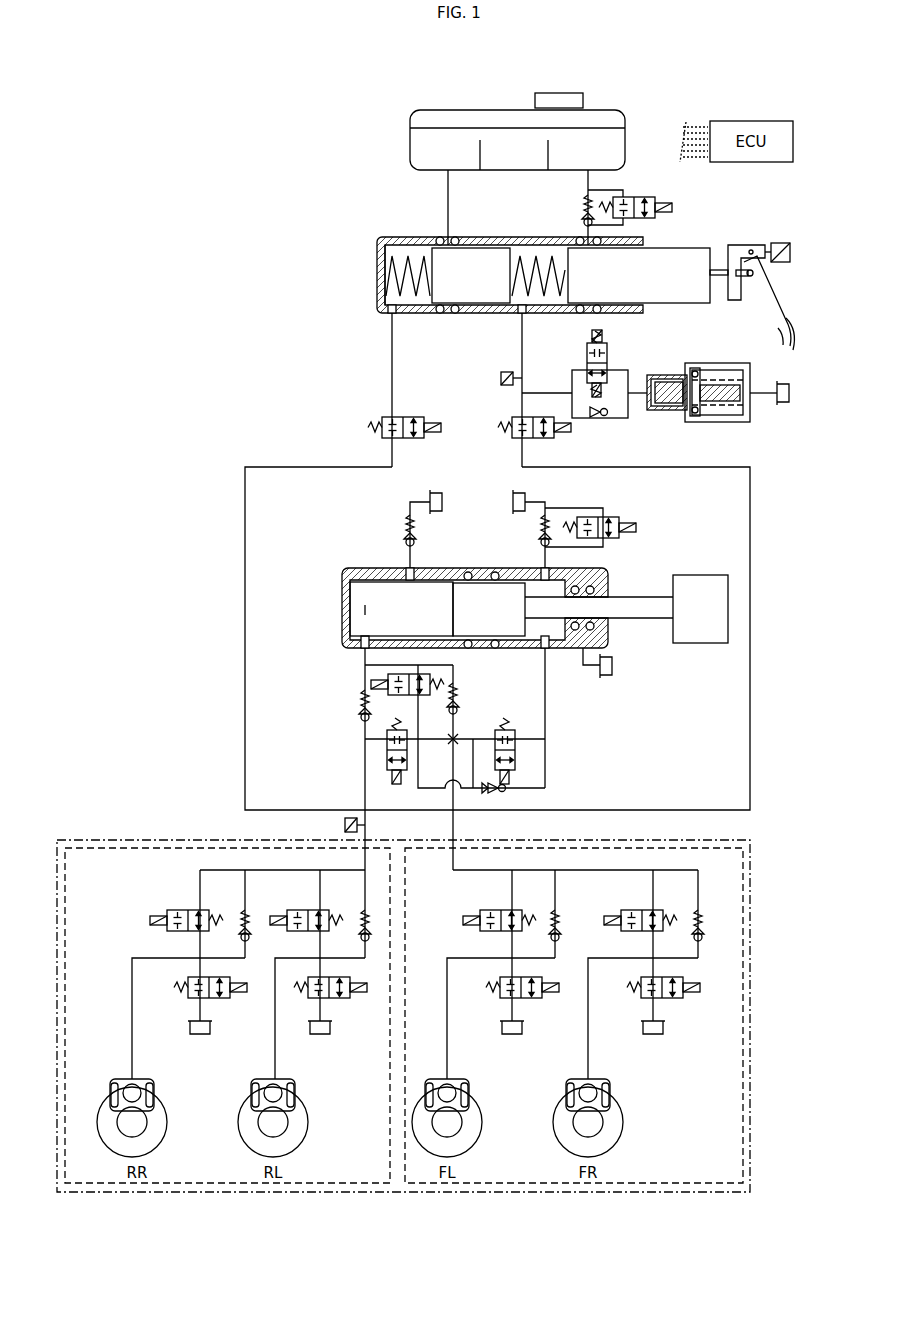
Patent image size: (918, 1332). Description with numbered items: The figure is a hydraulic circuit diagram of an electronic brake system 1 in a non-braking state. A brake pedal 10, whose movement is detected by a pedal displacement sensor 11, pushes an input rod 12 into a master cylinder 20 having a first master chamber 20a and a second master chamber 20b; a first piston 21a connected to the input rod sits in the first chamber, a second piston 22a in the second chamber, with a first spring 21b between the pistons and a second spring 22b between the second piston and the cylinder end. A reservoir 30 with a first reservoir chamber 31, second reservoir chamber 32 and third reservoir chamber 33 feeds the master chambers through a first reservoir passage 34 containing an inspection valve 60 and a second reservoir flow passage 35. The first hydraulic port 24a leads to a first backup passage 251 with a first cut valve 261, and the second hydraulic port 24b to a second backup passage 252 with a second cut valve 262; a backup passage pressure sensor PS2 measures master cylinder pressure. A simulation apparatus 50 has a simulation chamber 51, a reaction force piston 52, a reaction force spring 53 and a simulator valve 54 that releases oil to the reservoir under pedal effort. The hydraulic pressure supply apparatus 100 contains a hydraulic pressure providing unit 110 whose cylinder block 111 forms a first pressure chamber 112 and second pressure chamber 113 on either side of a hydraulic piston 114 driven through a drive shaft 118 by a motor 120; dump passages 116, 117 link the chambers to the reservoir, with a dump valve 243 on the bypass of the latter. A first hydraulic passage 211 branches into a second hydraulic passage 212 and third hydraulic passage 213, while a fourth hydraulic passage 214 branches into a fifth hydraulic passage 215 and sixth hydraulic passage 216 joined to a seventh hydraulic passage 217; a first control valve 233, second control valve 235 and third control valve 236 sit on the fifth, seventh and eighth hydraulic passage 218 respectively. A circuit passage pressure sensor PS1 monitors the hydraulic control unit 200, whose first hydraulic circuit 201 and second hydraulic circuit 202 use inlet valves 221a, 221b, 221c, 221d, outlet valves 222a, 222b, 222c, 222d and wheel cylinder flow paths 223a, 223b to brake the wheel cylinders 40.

The electronic brake system 1 is at (294, 86).
The reservoir 30 is at (410, 122).
The first reservoir chamber 31 is at (591, 147).
The second reservoir chamber 32 is at (501, 147).
The third reservoir chamber 33 is at (430, 147).
The first reservoir passage 34 is at (590, 186).
The second reservoir flow passage 35 is at (448, 186).
The inspection valve 60 is at (655, 200).
The master cylinder 20 is at (377, 258).
The first master chamber 20a is at (550, 250).
The second master chamber 20b is at (438, 246).
The first piston 21a is at (662, 252).
The first spring 21b is at (540, 308).
The second piston 22a is at (472, 252).
The second spring 22b is at (398, 282).
The first hydraulic port 24a is at (516, 312).
The second hydraulic port 24b is at (386, 310).
The input rod 12 is at (717, 269).
The pedal displacement sensor 11 is at (787, 244).
The brake pedal 10 is at (778, 298).
The second backup passage 252 is at (392, 357).
The first backup passage 251 is at (522, 357).
The backup passage pressure sensor PS2 is at (501, 379).
The second cut valve 262 is at (382, 426).
The first cut valve 261 is at (512, 426).
The simulator valve 54 is at (607, 352).
The reaction force piston 52 is at (665, 375).
The simulation chamber 51 is at (712, 363).
The reaction force spring 53 is at (692, 366).
The simulation apparatus 50 is at (764, 407).
The hydraulic pressure supply apparatus 100 is at (336, 527).
The hydraulic pressure providing unit 110 is at (338, 578).
The cylinder block 111 is at (346, 601).
The first pressure chamber 112 is at (365, 612).
The hydraulic piston 114 is at (500, 582).
The dump passage 116 is at (410, 551).
The dump passage 117 is at (548, 556).
The drive shaft 118 is at (640, 620).
The motor 120 is at (700, 575).
The dump valve 243 is at (592, 516).
The second pressure chamber 113 is at (552, 650).
The first hydraulic passage 211 is at (365, 658).
The second hydraulic passage 212 is at (453, 665).
The third hydraulic passage 213 is at (365, 727).
The fourth hydraulic passage 214 is at (545, 700).
The fifth hydraulic passage 215 is at (545, 738).
The sixth hydraulic passage 216 is at (545, 788).
The seventh hydraulic passage 217 is at (448, 734).
The eighth hydraulic passage 218 is at (418, 702).
The first control valve 233 is at (510, 730).
The second control valve 235 is at (387, 761).
The third control valve 236 is at (371, 681).
The circuit passage pressure sensor PS1 is at (345, 826).
The hydraulic control unit 200 is at (248, 836).
The first hydraulic circuit 201 is at (712, 869).
The second hydraulic circuit 202 is at (72, 869).
The inlet valve 221a is at (642, 910).
The inlet valve 221b is at (500, 910).
The inlet valve 221c is at (309, 910).
The inlet valve 221d is at (188, 910).
The outlet valve 222a is at (680, 1001).
The outlet valve 222b is at (538, 1001).
The outlet valve 222c is at (346, 1001).
The outlet valve 222d is at (226, 1001).
The wheel cylinder flow path 223a is at (588, 974).
The wheel cylinder flow path 223b is at (447, 974).
The wheel cylinder 40 is at (154, 1088).